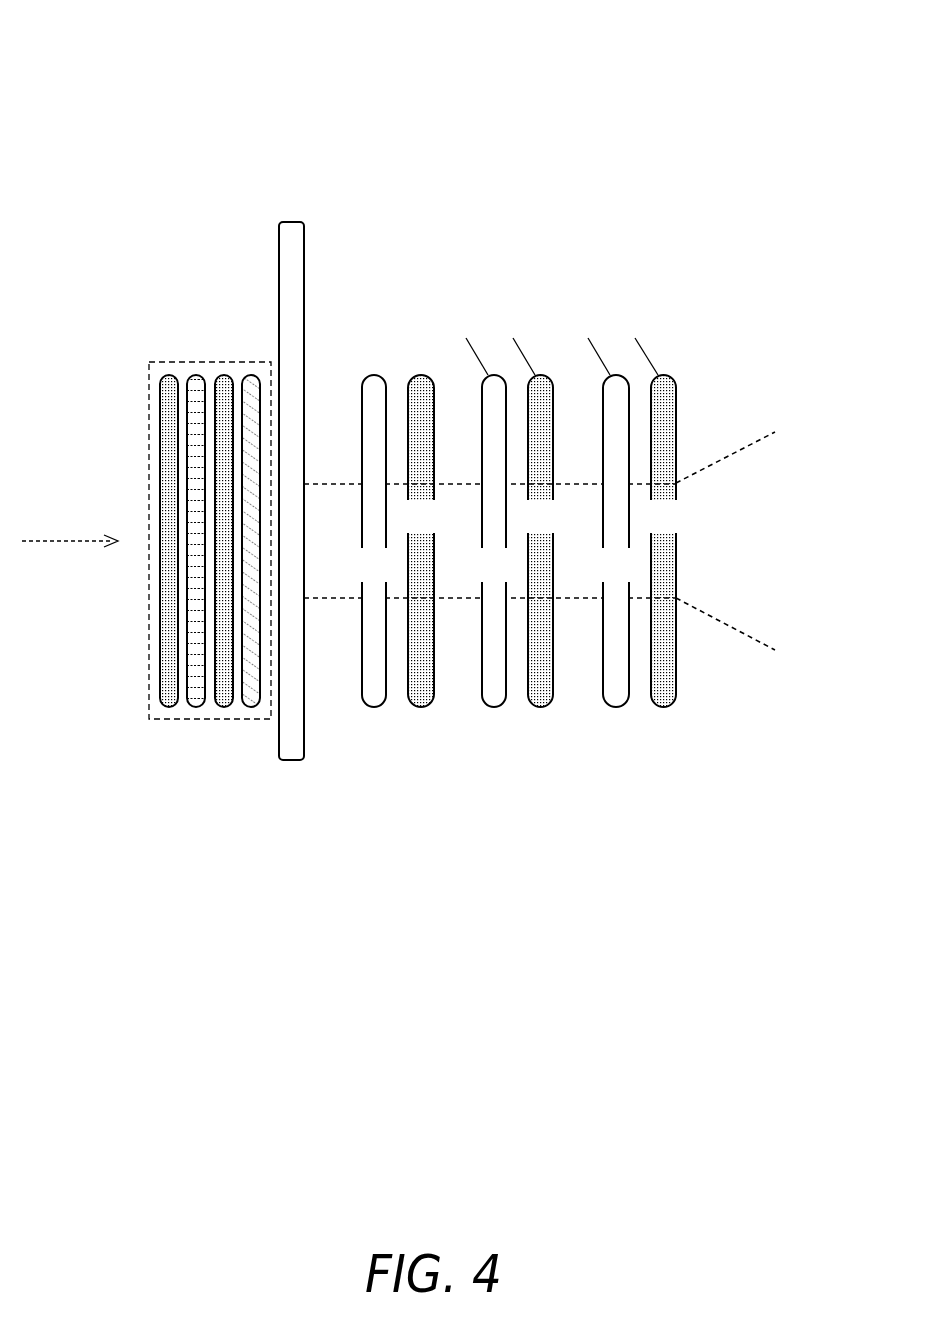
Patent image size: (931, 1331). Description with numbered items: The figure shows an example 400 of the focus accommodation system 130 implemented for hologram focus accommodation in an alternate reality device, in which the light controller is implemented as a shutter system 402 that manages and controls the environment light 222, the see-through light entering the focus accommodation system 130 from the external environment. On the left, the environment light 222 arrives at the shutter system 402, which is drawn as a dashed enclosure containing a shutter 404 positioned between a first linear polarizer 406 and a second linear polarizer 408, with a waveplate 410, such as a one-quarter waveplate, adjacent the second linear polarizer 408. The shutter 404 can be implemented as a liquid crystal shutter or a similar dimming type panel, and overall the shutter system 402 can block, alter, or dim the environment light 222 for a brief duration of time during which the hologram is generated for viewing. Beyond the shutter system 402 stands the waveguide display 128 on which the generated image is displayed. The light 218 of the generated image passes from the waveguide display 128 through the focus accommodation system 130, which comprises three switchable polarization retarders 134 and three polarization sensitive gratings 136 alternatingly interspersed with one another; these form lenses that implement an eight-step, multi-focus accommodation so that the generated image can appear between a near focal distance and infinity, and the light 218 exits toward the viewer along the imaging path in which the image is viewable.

The example 400 is at (588, 72).
The environment light 222 is at (70, 527).
The shutter system 402 is at (146, 388).
The shutter 404 is at (195, 376).
The first linear polarizer 406 is at (167, 708).
The second linear polarizer 408 is at (223, 708).
The waveplate 410 is at (250, 376).
The waveguide display 128 is at (290, 222).
The focus accommodation system 130 is at (720, 344).
The switchable polarization retarder 134 is at (368, 375).
The polarization sensitive grating 136 is at (415, 375).
The light 218 is at (724, 620).